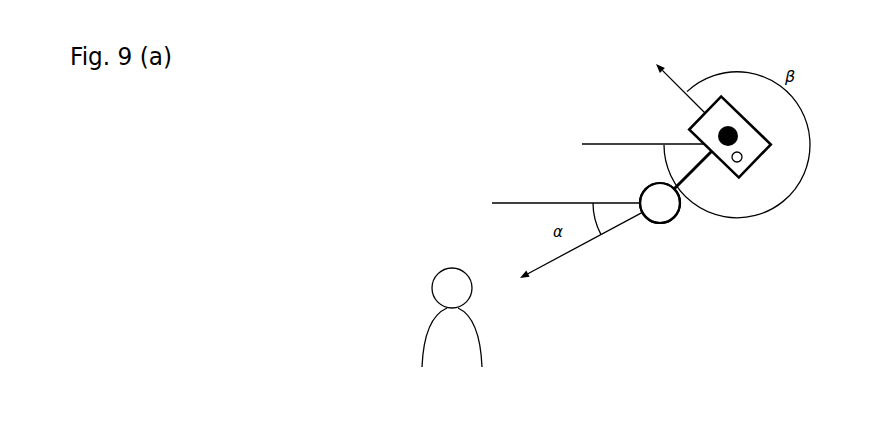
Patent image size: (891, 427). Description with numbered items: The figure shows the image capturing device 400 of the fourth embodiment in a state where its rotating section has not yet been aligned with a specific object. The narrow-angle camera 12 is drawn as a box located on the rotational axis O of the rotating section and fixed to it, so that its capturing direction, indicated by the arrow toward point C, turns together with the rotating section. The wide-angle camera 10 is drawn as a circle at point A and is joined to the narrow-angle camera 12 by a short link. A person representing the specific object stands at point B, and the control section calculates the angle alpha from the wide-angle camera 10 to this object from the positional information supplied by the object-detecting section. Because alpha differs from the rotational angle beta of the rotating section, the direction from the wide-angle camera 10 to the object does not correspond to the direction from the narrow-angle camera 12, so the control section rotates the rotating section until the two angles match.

The image capturing device 400 is at (741, 333).
The narrow-angle camera 12 is at (704, 136).
The wide-angle camera 10 is at (667, 222).
The pivot point A is at (656, 194).
The user B is at (445, 310).
The direction C is at (665, 84).